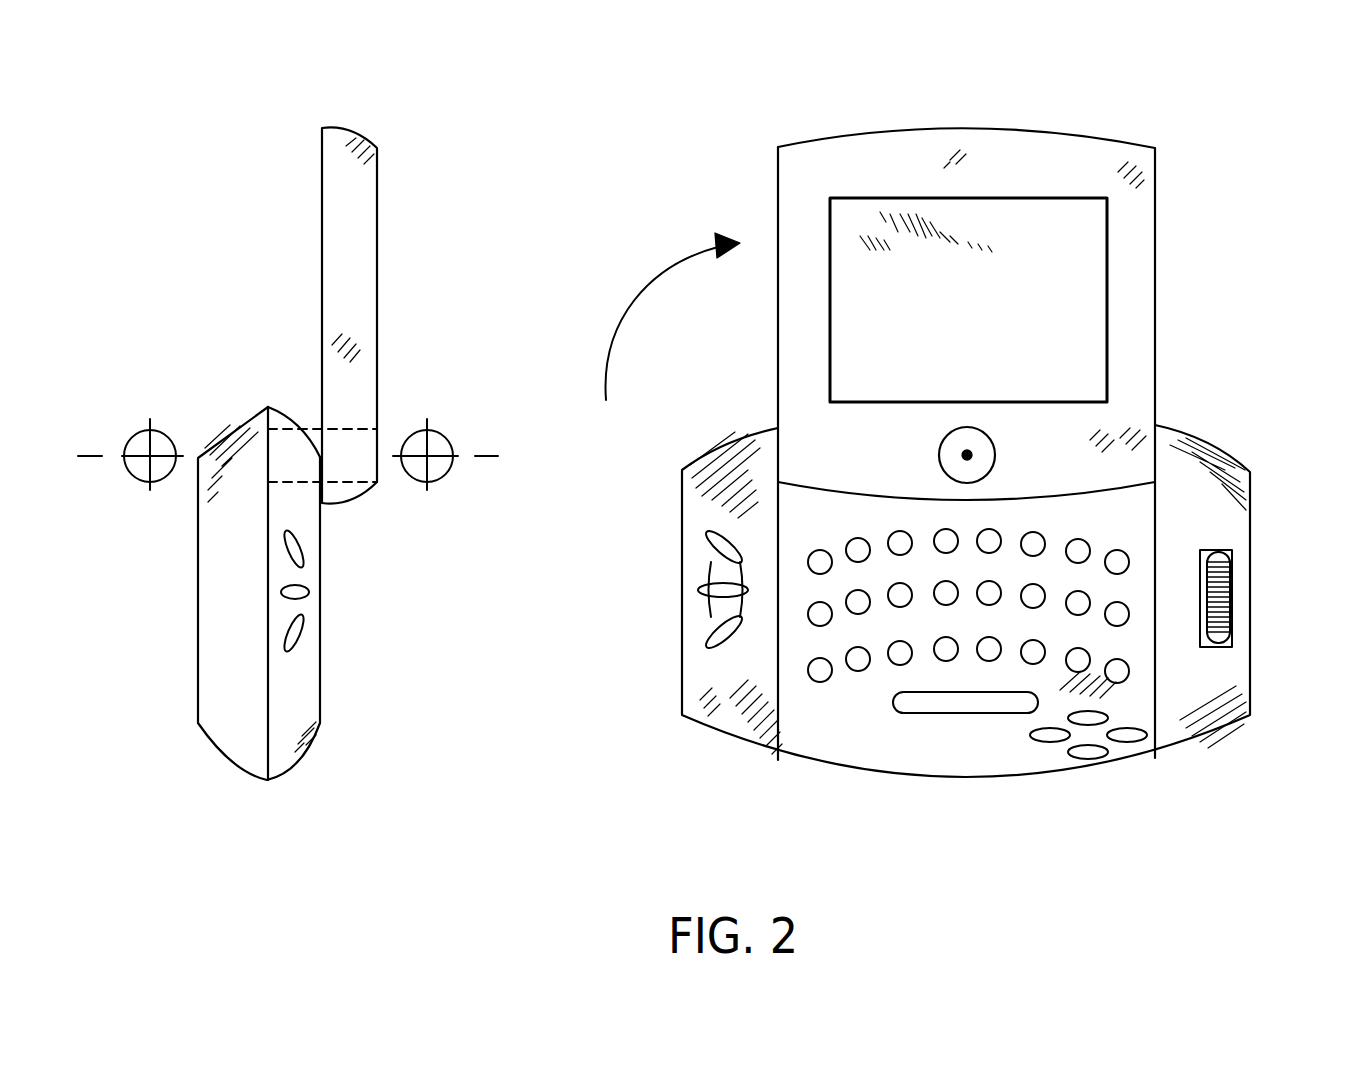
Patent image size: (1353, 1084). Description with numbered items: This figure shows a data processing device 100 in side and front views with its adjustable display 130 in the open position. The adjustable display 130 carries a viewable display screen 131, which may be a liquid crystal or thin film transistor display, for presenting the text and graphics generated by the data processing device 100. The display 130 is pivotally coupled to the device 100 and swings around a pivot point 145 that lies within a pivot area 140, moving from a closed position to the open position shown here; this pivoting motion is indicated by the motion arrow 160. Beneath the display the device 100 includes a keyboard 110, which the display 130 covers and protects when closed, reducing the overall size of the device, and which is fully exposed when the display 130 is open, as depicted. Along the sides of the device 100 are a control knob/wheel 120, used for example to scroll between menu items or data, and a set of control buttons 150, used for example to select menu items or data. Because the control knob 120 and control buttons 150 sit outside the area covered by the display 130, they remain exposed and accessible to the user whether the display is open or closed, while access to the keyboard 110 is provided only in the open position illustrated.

The data processing device 100 is at (350, 778).
The keyboard 110 is at (930, 713).
The control knob/wheel 120 is at (1232, 565).
The adjustable display 130 is at (338, 165).
The display screen 131 is at (1040, 218).
The pivot area 140 is at (345, 457).
The pivot point 145 is at (953, 447).
The control buttons 150 is at (308, 593).
The motion arrow 160 is at (669, 316).